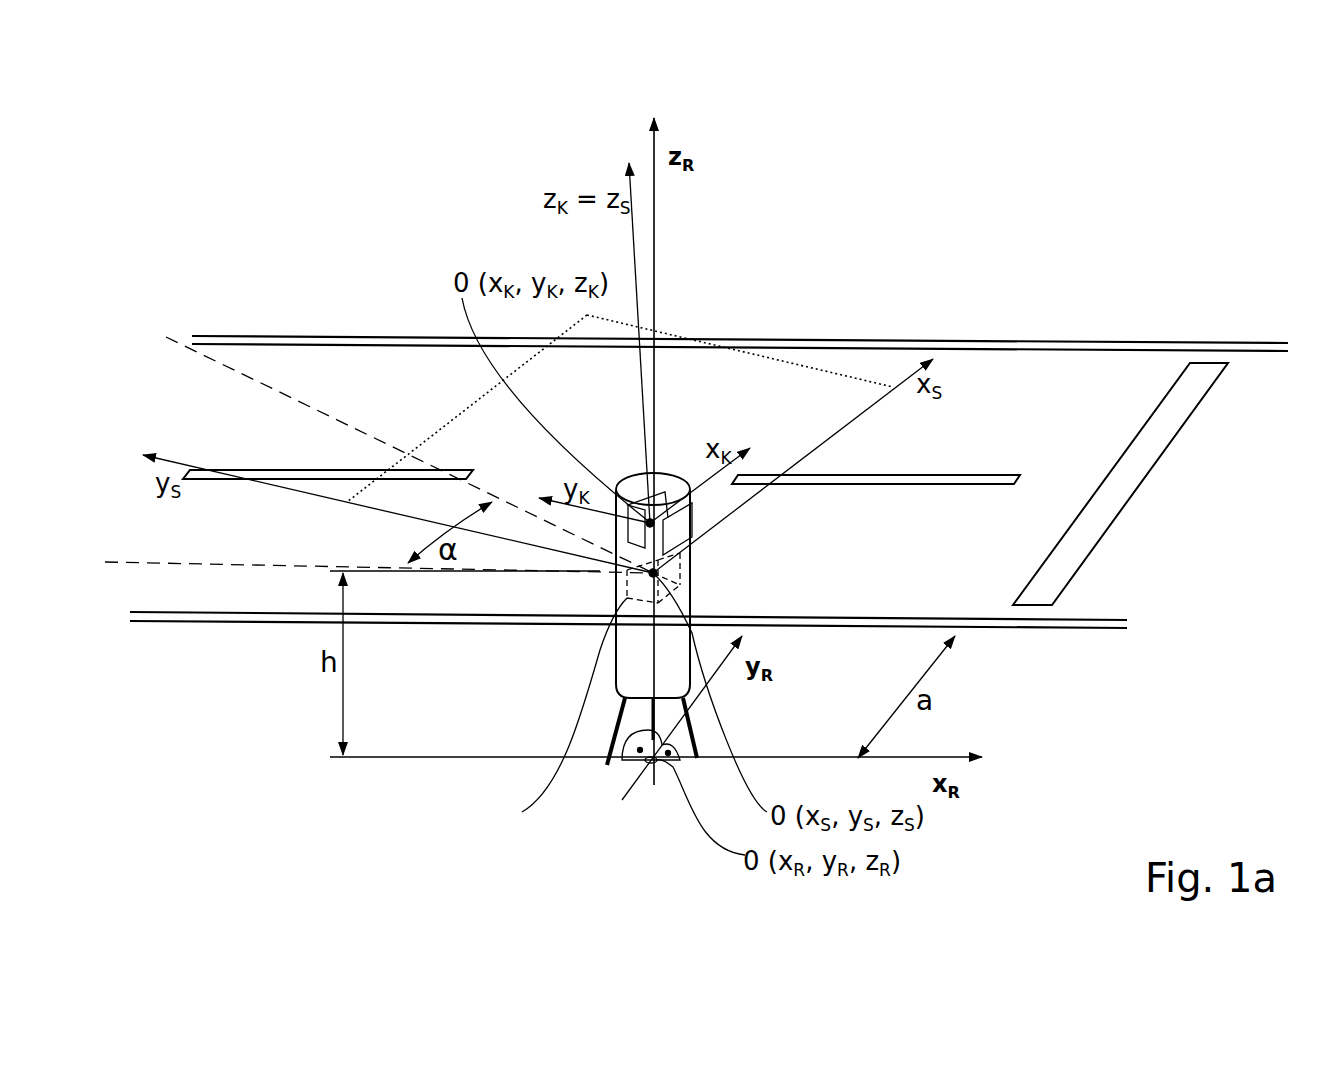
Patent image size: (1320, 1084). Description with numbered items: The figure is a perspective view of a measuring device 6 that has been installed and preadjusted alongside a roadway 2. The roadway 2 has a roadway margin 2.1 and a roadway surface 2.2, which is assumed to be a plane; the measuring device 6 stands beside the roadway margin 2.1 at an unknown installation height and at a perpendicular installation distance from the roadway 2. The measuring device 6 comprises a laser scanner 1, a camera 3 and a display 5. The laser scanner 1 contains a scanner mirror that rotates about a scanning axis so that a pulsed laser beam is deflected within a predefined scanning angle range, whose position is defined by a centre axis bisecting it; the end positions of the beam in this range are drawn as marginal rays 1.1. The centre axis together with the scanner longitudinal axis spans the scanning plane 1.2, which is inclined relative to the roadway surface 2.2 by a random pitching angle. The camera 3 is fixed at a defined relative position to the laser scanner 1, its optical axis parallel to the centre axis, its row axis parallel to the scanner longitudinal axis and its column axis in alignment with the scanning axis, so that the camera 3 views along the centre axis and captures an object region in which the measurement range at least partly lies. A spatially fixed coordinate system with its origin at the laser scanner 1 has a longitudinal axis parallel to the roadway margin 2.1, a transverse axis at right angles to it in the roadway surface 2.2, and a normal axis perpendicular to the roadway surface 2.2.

The laser scanner 1 is at (630, 658).
The marginal rays 1.1 is at (253, 378).
The scanning plane 1.2 is at (700, 383).
The roadway 2 is at (964, 310).
The roadway margin 2.1 is at (1043, 630).
The roadway surface 2.2 is at (1060, 386).
The camera 3 is at (638, 528).
The display 5 is at (640, 587).
The measuring device 6 is at (653, 573).